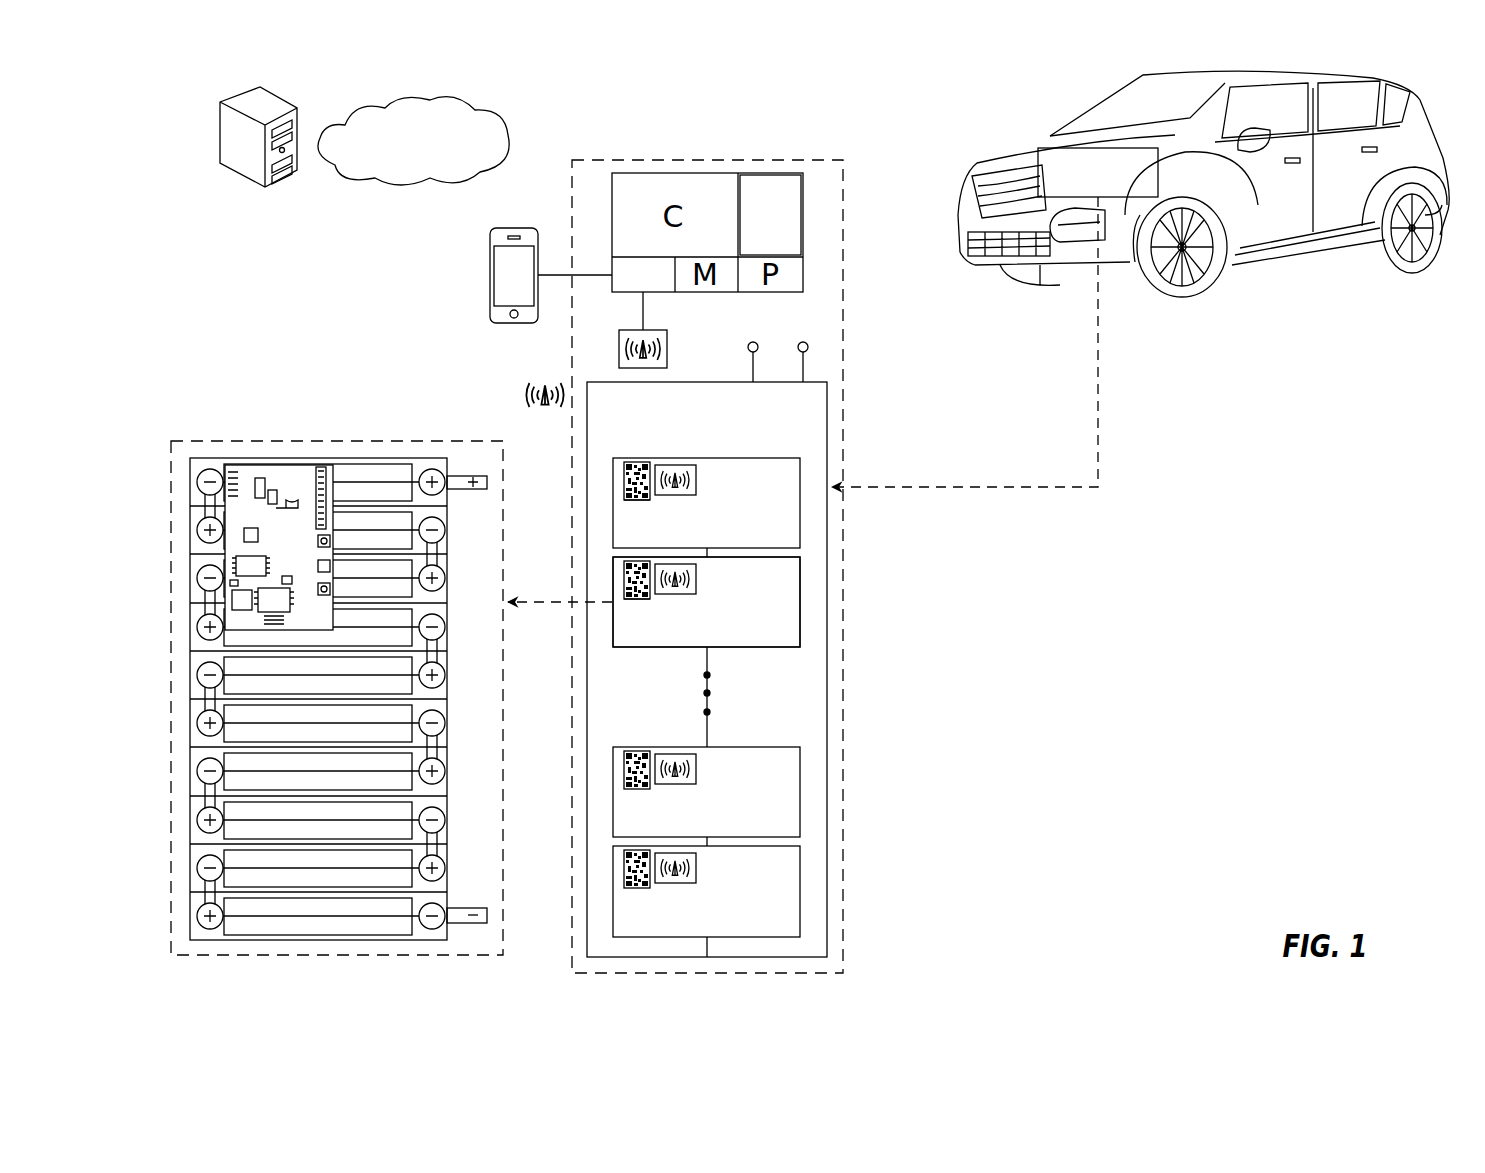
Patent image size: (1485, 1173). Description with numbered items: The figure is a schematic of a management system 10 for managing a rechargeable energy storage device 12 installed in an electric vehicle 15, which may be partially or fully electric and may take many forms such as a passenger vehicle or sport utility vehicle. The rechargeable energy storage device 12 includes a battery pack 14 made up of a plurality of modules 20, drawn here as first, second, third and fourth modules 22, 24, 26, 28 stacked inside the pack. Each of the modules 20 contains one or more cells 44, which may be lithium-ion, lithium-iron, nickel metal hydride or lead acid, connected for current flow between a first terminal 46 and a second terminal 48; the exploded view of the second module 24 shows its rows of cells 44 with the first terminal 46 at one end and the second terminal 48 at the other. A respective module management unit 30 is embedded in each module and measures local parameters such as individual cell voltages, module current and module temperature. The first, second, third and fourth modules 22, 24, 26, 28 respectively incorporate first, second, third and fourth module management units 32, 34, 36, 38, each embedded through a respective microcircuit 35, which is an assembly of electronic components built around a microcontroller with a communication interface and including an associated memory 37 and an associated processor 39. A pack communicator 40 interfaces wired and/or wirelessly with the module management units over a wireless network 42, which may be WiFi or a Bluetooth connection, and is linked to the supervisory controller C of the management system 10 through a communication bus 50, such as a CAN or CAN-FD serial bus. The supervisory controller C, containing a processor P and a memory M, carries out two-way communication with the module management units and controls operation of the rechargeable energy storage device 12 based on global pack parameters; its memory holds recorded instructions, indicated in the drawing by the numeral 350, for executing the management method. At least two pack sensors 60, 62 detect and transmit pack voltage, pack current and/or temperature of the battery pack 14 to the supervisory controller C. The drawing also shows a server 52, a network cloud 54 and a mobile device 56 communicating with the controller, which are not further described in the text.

The management system 10 is at (704, 110).
The rechargeable energy storage device 12 is at (826, 380).
The battery pack 14 is at (853, 432).
The electric vehicle 15 is at (972, 128).
The plurality of modules 20 is at (804, 597).
The first module 22 is at (800, 500).
The second module 24 is at (800, 600).
The third module 26 is at (800, 790).
The fourth module 28 is at (800, 890).
The module management unit 30 is at (652, 602).
The first module management unit 32 is at (714, 479).
The second module management unit 34 is at (714, 579).
The microcircuit 35 is at (624, 577).
The third module management unit 36 is at (714, 767).
The memory 37 is at (636, 462).
The fourth module management unit 38 is at (714, 867).
The processor 39 is at (642, 500).
The pack communicator 40 is at (667, 352).
The wireless network 42 is at (528, 382).
The cells 44 is at (192, 582).
The first terminal 46 is at (458, 490).
The second terminal 48 is at (465, 910).
The communication bus 50 is at (643, 318).
The remote server 52 is at (228, 133).
The network cloud 54 is at (415, 105).
The mobile device 56 is at (490, 275).
The pack sensor 60 is at (752, 342).
The pack sensor 62 is at (803, 342).
The control method 350 is at (746, 228).